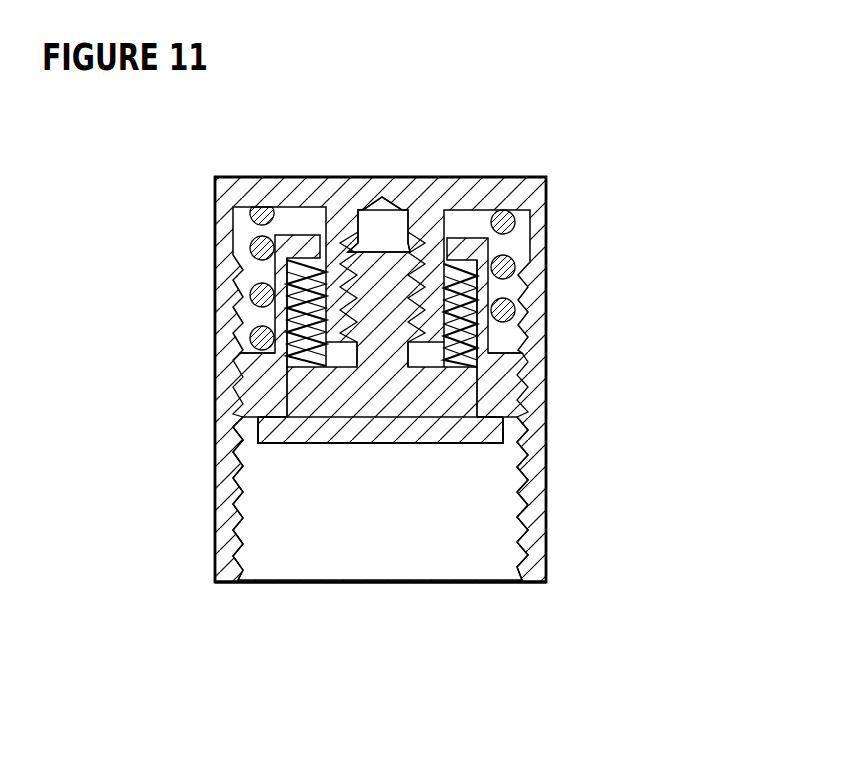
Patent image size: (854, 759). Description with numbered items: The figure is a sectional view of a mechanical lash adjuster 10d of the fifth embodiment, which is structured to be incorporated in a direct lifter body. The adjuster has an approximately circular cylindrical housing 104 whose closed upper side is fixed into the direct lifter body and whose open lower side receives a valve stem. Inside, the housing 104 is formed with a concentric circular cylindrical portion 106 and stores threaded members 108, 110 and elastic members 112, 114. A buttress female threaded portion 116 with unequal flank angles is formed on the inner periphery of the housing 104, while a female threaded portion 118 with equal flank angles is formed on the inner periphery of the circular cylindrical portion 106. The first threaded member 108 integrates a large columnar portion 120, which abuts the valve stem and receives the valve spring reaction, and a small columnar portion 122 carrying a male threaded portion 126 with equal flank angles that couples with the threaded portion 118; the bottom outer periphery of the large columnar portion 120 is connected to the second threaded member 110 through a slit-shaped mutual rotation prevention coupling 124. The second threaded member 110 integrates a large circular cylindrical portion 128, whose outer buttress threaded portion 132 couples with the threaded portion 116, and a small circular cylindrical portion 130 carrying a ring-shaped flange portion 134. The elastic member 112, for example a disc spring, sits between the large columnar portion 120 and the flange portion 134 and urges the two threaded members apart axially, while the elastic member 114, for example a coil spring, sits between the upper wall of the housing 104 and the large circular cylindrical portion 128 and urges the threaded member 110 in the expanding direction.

The mechanical lash adjuster 10d is at (582, 338).
The housing 104 is at (559, 499).
The circular cylindrical portion 106 is at (432, 242).
The threaded member 108 is at (403, 459).
The threaded member 110 is at (250, 387).
The elastic member 112 is at (528, 300).
The elastic member 114 is at (243, 245).
The threaded portion 116 is at (243, 548).
The threaded portion 118 is at (400, 230).
The large columnar portion 120 is at (337, 417).
The small columnar portion 122 is at (372, 258).
The mutual rotation prevention coupling 124 is at (500, 420).
The threaded portion 126 is at (338, 250).
The large circular cylindrical portion 128 is at (497, 388).
The small circular cylindrical portion 130 is at (517, 267).
The threaded portion 132 is at (532, 425).
The flange portion 134 is at (472, 238).